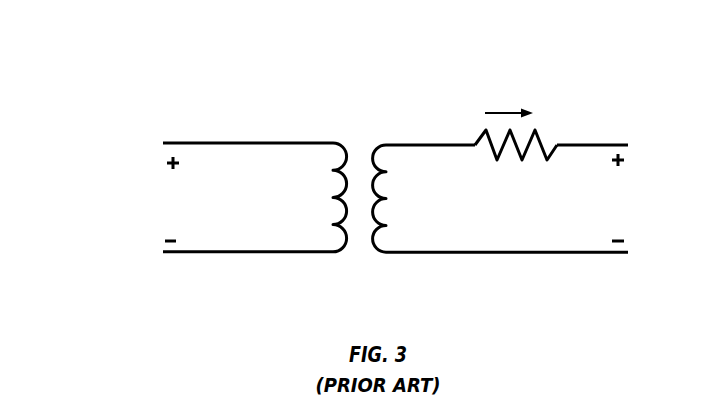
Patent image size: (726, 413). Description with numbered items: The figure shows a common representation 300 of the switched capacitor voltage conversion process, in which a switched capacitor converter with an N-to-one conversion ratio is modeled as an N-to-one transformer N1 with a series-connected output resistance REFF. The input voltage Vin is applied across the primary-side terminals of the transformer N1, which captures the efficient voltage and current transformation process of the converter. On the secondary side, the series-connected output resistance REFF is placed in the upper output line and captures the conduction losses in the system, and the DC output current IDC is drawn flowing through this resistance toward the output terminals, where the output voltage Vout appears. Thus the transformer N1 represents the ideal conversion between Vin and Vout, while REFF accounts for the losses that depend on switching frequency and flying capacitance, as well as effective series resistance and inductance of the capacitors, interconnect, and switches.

The common representation 300 is at (58, 33).
The N:1 transformer N1 is at (395, 174).
The series-connected output resistance REFF is at (516, 165).
The DC output current IDC is at (509, 95).
The input voltage Vin is at (175, 199).
The output voltage Vout is at (621, 197).